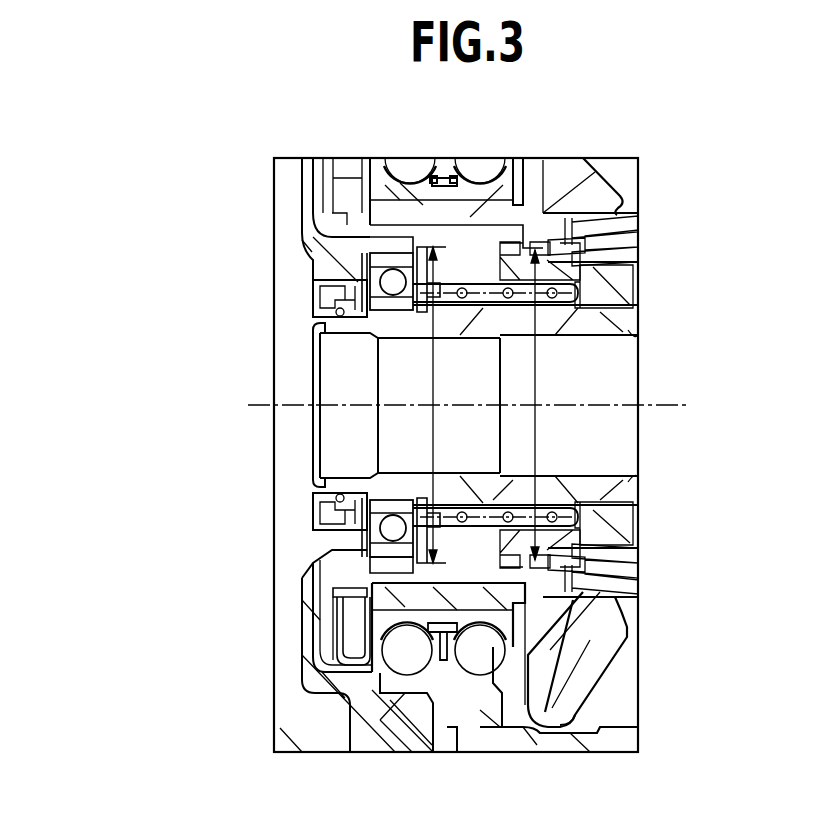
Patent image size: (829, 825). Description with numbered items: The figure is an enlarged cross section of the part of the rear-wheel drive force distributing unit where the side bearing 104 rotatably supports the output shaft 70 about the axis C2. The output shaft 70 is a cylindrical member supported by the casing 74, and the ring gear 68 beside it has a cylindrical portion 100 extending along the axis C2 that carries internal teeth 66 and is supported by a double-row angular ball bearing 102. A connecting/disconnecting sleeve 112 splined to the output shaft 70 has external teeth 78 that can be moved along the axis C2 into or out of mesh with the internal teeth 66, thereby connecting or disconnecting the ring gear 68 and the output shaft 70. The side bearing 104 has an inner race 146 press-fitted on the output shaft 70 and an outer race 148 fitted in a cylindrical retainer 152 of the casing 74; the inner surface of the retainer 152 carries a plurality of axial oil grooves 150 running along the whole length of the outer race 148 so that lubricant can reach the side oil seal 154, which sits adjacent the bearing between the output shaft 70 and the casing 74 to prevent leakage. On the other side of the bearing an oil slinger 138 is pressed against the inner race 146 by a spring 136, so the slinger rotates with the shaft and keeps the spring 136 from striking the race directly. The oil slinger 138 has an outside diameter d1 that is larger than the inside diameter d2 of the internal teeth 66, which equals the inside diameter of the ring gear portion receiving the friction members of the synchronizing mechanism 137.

The internal teeth 66 is at (535, 575).
The ring gear 68 is at (557, 215).
The output shaft 70 is at (617, 324).
The casing 74 is at (302, 208).
The external teeth 78 is at (511, 200).
The cylindrical portion 100 is at (463, 217).
The double-row angular ball bearing 102 is at (478, 657).
The side bearing 104 is at (364, 264).
The connecting/disconnecting sleeve 112 is at (623, 284).
The spring 136 is at (549, 288).
The synchronizing mechanism 137 is at (650, 238).
The oil slinger 138 is at (393, 568).
The inner race 146 is at (390, 302).
The outer race 148 is at (393, 258).
The oil grooves 150 is at (397, 547).
The cylindrical retainer 152 is at (400, 560).
The side oil seal 154 is at (313, 513).
The axis C2 is at (662, 408).
The outside diameter d1 is at (422, 405).
The inside diameter d2 is at (523, 405).